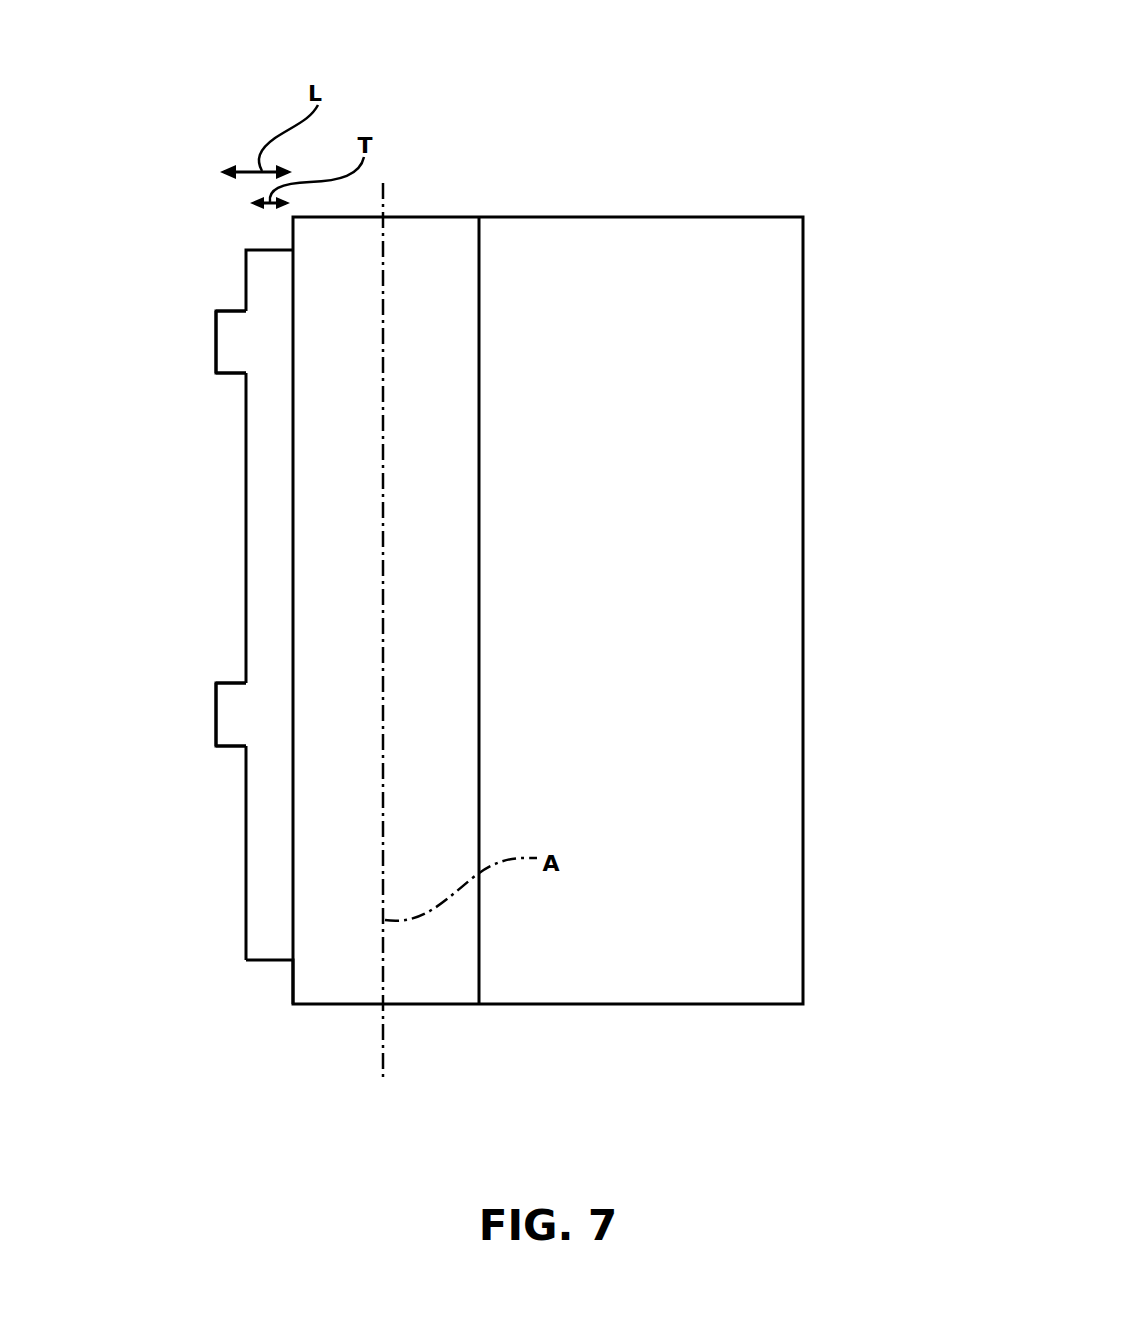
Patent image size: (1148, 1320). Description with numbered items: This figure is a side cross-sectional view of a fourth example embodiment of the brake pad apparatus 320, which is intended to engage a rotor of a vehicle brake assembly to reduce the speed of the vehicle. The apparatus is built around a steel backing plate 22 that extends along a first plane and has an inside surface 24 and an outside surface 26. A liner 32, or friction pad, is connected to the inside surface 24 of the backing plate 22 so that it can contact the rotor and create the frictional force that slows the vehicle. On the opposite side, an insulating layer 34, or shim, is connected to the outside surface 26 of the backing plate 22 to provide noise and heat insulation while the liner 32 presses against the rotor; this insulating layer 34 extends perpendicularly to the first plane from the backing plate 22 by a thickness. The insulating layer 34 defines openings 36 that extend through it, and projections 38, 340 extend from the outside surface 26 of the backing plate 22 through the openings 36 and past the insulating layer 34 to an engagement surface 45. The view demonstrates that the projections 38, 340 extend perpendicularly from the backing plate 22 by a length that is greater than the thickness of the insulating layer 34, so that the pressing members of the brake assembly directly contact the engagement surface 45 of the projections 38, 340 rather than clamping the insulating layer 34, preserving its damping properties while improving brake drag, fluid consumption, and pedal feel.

The brake pad apparatus 320 is at (652, 136).
The backing plate 22 is at (430, 733).
The inside surface 24 is at (479, 372).
The liner 32 is at (757, 442).
The outside surface 26 is at (292, 985).
The insulating layer 34 is at (258, 534).
The projection 38 is at (216, 343).
The engagement surface 45 is at (216, 322).
The projection 340 is at (230, 358).
The opening 36 is at (262, 373).